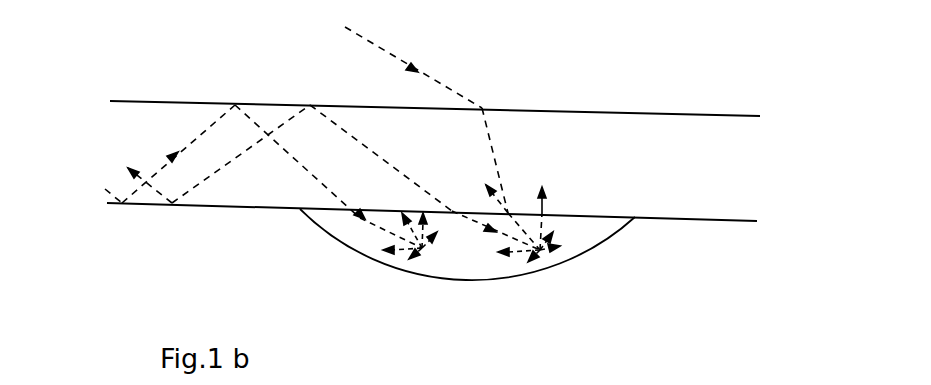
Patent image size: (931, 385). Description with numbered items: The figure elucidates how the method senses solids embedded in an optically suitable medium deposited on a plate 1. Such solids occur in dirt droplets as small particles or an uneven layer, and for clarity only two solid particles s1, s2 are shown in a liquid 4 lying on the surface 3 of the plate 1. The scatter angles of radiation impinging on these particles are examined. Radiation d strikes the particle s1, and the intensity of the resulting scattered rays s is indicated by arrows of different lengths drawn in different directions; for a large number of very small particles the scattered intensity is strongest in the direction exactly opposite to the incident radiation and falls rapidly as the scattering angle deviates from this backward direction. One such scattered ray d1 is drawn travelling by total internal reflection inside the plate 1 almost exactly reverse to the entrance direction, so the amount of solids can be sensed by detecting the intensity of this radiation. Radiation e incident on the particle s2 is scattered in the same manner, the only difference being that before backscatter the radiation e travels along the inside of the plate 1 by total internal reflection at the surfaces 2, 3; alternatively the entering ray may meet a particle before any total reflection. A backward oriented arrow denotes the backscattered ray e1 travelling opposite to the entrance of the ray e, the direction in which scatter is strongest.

The plate 1 is at (582, 130).
The surface 2 is at (628, 110).
The surface 3 is at (725, 222).
The liquid 4 is at (582, 235).
The radiation d is at (425, 77).
The scattered ray d1 is at (383, 160).
The radiation e is at (181, 152).
The backscattered ray e1 is at (220, 120).
The scattered rays s is at (544, 208).
The solid particle s1 is at (545, 255).
The solid particle s2 is at (427, 250).